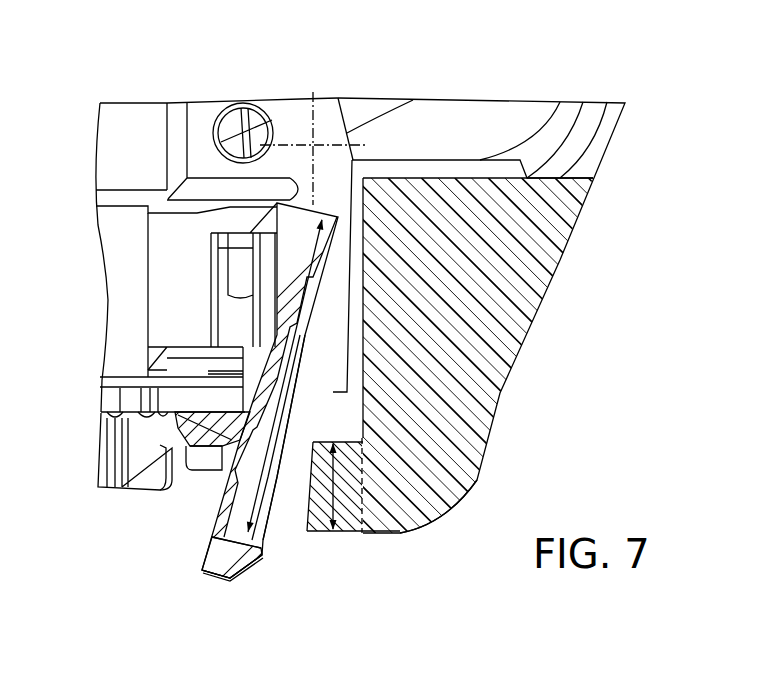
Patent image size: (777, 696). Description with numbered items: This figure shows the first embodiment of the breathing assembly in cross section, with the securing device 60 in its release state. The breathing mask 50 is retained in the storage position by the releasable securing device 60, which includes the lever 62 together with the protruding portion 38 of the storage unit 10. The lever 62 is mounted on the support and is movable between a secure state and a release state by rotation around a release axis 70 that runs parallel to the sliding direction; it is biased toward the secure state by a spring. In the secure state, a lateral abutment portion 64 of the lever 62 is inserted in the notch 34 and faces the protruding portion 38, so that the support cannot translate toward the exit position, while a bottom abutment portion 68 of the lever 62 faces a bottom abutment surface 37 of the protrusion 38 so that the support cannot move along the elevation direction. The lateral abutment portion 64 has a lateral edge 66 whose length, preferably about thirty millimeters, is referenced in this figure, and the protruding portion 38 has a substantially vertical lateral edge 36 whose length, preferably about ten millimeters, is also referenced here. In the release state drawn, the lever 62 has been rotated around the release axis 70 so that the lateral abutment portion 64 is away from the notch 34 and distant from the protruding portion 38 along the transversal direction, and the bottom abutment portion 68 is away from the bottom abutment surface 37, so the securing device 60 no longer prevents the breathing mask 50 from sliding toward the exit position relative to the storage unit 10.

The storage unit 10 is at (567, 357).
The notch 34 is at (347, 437).
The lateral edge 36 is at (310, 497).
The bottom abutment surface 37 is at (348, 538).
The protruding portion 38 is at (347, 473).
The breathing mask 50 is at (103, 523).
The securing device 60 is at (260, 575).
The lever 62 is at (213, 542).
The lateral abutment portion 64 is at (213, 577).
The lateral edge 66 is at (273, 517).
The bottom abutment portion 68 is at (248, 577).
The release axis 70 is at (313, 140).